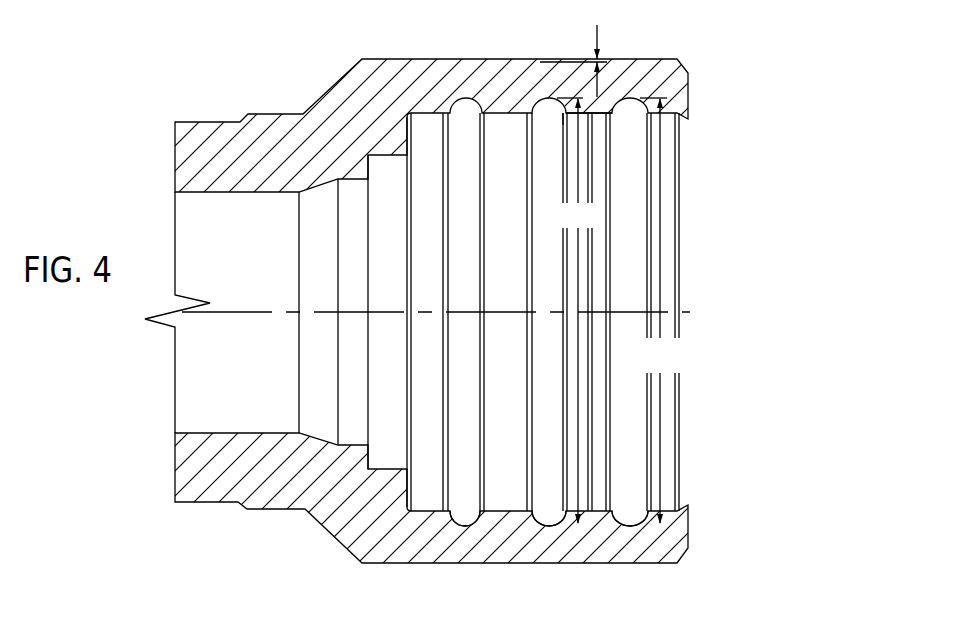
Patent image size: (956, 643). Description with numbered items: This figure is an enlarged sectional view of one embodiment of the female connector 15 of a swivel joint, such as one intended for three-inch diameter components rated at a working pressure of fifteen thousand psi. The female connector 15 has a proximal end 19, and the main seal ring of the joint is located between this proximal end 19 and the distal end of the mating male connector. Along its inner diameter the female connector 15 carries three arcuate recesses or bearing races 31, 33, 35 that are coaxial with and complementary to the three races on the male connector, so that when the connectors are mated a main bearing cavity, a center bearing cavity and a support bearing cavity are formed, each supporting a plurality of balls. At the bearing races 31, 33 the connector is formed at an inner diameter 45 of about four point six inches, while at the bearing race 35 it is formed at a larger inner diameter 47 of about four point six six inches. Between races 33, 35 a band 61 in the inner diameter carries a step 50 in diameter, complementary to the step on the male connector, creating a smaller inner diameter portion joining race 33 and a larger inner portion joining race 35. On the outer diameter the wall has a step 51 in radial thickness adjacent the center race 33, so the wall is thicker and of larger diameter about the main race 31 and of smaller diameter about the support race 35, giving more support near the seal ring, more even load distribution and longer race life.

The female connector 15 is at (703, 120).
The proximal end 19 is at (379, 455).
The bearing race 31 is at (455, 523).
The bearing race 33 is at (538, 523).
The bearing race 35 is at (620, 523).
The inner diameter 45 is at (573, 311).
The inner diameter 47 is at (656, 311).
The step 50 is at (602, 118).
The step 51 is at (575, 48).
The band 61 is at (565, 120).